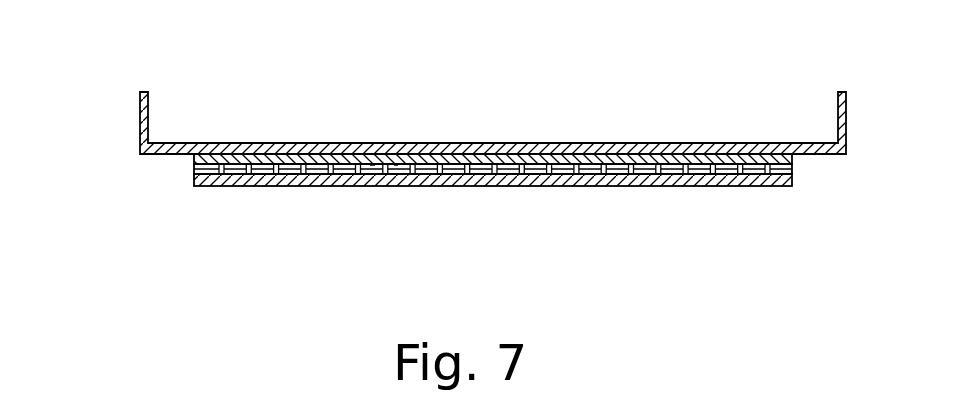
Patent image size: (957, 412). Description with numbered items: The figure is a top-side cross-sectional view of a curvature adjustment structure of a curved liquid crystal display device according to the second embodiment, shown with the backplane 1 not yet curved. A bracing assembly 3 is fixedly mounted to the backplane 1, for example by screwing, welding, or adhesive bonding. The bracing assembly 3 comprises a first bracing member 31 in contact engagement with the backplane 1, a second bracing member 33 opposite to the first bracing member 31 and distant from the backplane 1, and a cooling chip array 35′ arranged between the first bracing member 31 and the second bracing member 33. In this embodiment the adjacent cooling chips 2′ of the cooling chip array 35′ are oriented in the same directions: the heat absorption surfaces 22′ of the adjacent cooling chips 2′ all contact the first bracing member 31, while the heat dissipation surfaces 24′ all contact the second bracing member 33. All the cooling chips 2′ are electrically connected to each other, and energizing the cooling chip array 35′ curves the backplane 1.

The backplane 1 is at (190, 152).
The bracing assembly 3 is at (55, 155).
The first bracing member 31 is at (194, 160).
The cooling chip array 35′ is at (194, 171).
The second bracing member 33 is at (194, 181).
The heat dissipation surface 24′ is at (373, 171).
The cooling chip 2′ is at (363, 172).
The heat absorption surface 22′ is at (371, 173).